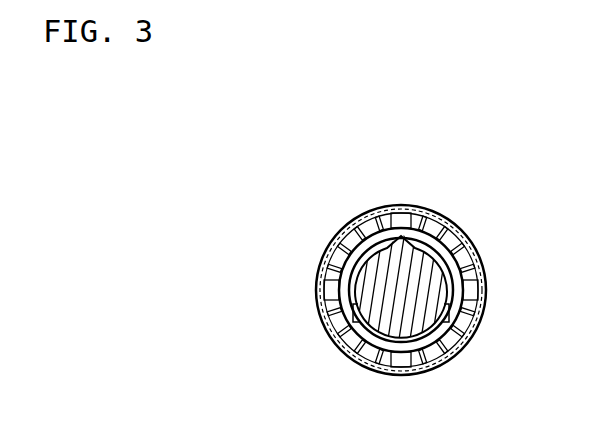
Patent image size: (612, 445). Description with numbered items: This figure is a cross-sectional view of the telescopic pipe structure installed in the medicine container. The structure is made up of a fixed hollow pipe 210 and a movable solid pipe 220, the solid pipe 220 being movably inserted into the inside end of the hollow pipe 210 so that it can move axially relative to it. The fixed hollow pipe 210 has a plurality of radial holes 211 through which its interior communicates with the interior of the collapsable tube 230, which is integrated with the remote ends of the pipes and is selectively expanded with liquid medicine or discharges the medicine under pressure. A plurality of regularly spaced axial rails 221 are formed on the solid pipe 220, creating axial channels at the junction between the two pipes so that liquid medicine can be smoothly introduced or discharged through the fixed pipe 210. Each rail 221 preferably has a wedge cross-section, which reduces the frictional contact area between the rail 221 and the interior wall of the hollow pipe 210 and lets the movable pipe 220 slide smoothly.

The fixed hollow pipe 210 is at (337, 245).
The radial holes 211 is at (483, 282).
The movable solid pipe 220 is at (352, 222).
The axial rails 221 is at (430, 212).
The collapsable tube 230 is at (330, 332).